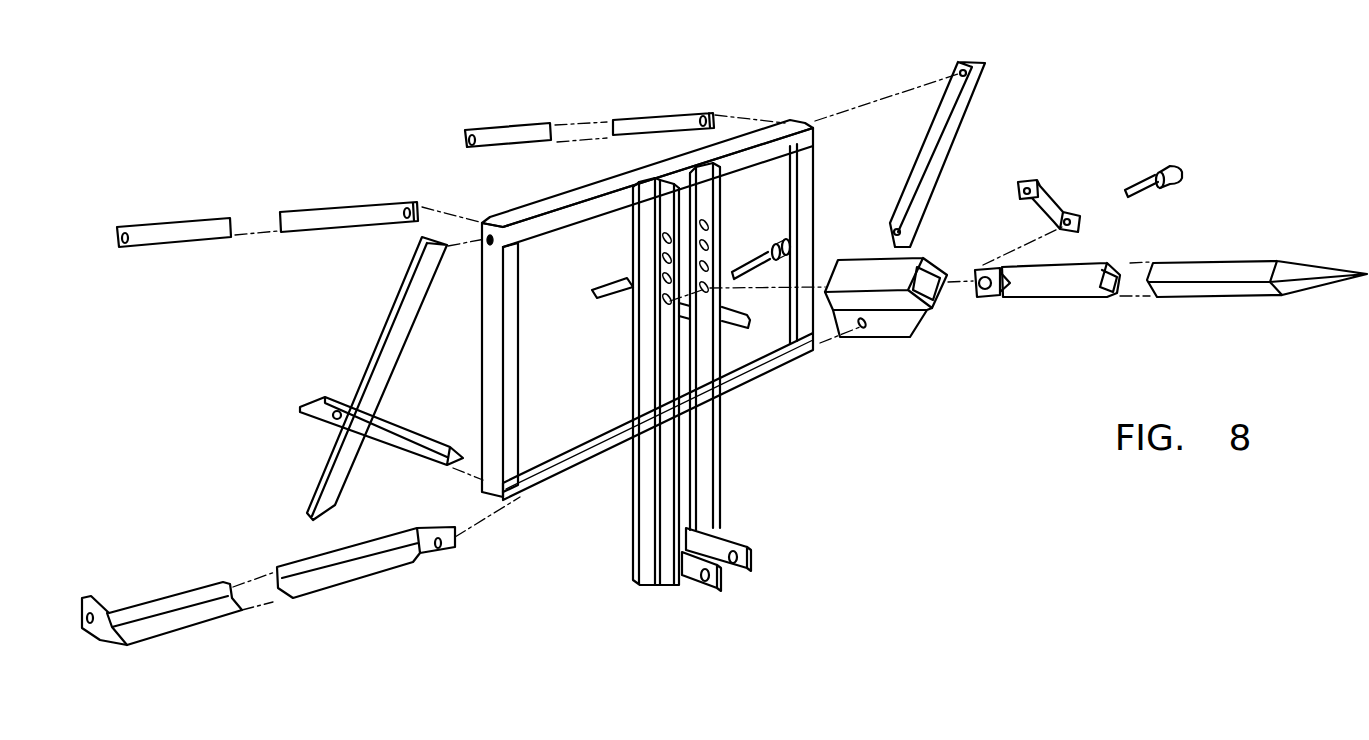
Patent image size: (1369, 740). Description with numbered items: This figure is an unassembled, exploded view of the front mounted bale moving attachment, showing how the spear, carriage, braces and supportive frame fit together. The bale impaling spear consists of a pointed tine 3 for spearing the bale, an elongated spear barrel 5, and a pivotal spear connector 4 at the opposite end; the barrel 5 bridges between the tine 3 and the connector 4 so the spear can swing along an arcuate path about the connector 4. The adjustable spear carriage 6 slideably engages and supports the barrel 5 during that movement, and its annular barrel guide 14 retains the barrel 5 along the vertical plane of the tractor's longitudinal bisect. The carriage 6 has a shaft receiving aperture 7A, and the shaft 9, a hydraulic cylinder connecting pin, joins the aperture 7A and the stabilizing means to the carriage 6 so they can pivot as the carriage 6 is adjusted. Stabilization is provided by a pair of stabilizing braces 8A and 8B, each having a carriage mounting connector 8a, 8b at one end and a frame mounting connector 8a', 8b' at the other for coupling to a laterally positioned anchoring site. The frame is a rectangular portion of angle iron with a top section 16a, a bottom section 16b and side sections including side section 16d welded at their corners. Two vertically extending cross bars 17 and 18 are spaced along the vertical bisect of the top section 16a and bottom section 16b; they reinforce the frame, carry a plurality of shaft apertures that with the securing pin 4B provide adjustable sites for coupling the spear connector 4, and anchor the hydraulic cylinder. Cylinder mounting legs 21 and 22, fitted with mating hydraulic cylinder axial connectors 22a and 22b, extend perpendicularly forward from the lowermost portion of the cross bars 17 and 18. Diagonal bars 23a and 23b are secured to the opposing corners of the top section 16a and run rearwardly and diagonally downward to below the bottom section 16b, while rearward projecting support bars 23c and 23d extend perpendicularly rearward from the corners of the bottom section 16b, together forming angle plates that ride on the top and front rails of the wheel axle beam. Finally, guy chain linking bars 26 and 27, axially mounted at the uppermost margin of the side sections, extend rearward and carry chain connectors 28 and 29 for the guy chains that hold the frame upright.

The tine 3 is at (1305, 262).
The pivotal spear connector 4 is at (982, 297).
The securing pin 4B is at (906, 301).
The spear barrel 5 is at (1167, 267).
The adjustable spear carriage 6 is at (896, 344).
The shaft receiving aperture 7A is at (860, 330).
The stabilizing brace 8A is at (1049, 201).
The stabilizing brace 8B is at (270, 618).
The carriage mounting connector 8a is at (1095, 238).
The frame mounting connector 8a' is at (999, 169).
The carriage mounting connector 8b is at (85, 661).
The frame mounting connector 8b' is at (453, 582).
The shaft 9 is at (1153, 170).
The barrel guide 14 is at (918, 255).
The top section 16a is at (553, 202).
The bottom section 16b is at (760, 367).
The side section 16d is at (490, 375).
The cross bar 17 is at (720, 228).
The cross bar 18 is at (630, 467).
The cylinder mounting leg 21 is at (763, 546).
The cylinder mounting leg 22 is at (738, 599).
The hydraulic cylinder axial connector 22a is at (708, 583).
The hydraulic cylinder axial connector 22b is at (738, 563).
The diagonal bar 23a is at (963, 122).
The diagonal bar 23b is at (380, 327).
The rearward projecting support bar 23c is at (665, 303).
The rearward projecting support bar 23d is at (410, 447).
The guy chain linking bar 26 is at (648, 113).
The guy chain linking bar 27 is at (215, 218).
The chain connector 28 is at (465, 140).
The chain connector 29 is at (115, 240).